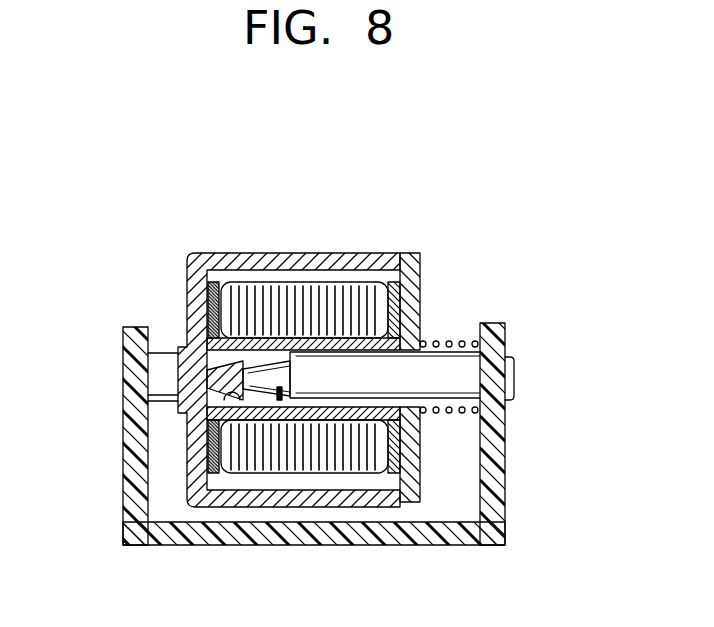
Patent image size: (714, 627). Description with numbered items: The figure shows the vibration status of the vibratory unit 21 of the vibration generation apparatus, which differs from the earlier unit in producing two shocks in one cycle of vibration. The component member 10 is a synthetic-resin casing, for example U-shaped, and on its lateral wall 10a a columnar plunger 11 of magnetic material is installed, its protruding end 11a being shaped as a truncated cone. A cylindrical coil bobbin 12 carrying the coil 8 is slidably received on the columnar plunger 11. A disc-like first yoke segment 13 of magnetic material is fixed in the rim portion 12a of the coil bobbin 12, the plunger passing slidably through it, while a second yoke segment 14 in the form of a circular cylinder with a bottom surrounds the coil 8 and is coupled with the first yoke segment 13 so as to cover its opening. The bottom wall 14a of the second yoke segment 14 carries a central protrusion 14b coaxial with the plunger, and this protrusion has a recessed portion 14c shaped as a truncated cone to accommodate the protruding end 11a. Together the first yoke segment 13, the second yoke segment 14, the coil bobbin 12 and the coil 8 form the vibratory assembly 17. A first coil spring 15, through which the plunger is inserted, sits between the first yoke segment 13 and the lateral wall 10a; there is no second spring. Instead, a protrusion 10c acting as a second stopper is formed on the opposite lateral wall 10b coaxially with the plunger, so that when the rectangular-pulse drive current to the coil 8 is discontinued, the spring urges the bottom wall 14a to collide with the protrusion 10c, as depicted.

The coil 8 is at (362, 297).
The component member 10 is at (316, 417).
The lateral wall 10a is at (493, 420).
The lateral wall 10b is at (123, 353).
The protrusion 10c is at (167, 363).
The columnar plunger 11 is at (409, 453).
The protruding end 11a is at (280, 402).
The coil bobbin 12 is at (360, 340).
The rim portion 12a is at (415, 279).
The first yoke segment 13 is at (398, 301).
The second yoke segment 14 is at (227, 343).
The bottom wall 14a is at (197, 260).
The protrusion 14b is at (222, 292).
The recessed portion 14c is at (192, 416).
The first coil spring 15 is at (440, 340).
The vibratory assembly 17 is at (491, 176).
The vibratory unit 21 is at (548, 236).